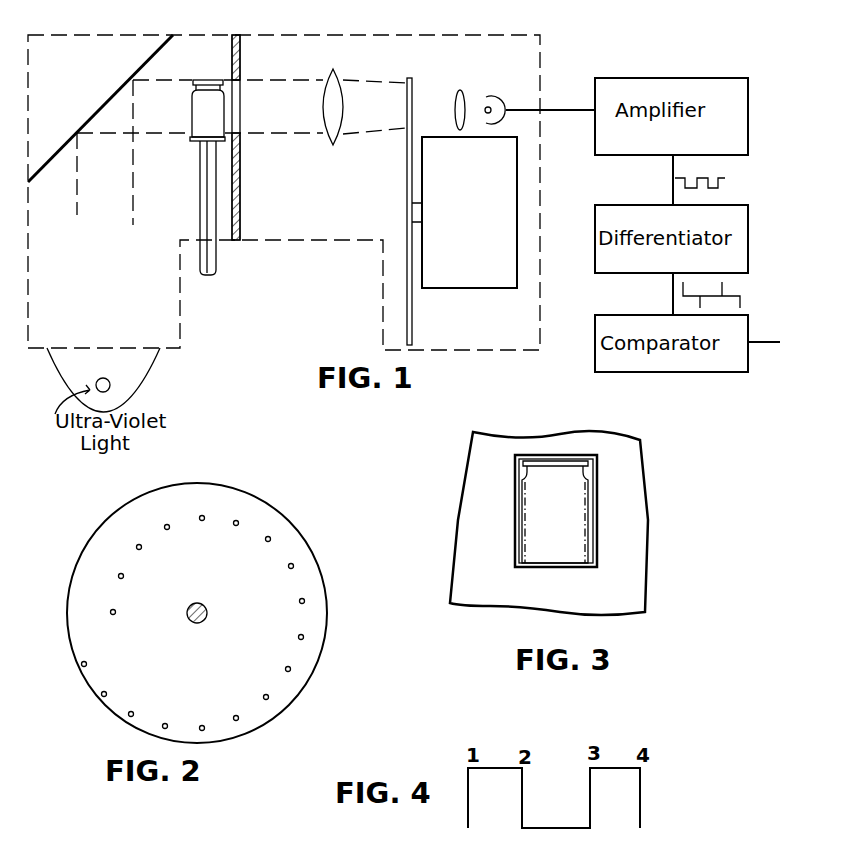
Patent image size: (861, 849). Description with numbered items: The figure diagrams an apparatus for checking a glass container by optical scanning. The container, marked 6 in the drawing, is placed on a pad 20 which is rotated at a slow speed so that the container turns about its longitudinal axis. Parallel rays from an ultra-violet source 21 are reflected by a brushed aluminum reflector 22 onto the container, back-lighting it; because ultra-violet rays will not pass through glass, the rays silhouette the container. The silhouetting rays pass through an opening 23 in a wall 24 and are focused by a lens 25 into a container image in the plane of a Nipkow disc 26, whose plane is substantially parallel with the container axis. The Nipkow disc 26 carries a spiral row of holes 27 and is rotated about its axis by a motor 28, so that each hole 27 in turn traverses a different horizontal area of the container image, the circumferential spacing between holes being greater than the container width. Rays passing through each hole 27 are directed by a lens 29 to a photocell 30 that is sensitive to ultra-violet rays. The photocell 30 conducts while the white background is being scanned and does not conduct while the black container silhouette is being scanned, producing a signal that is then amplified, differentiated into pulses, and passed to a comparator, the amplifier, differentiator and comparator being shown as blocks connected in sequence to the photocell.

In FIG. 1, the cap of sample tube 6 is at (207, 80).
In FIG. 1, the pad 20 is at (192, 140).
In FIG. 1, the ultra-violet source 21 is at (117, 384).
In FIG. 1, the brushed aluminum reflector 22 is at (87, 123).
In FIG. 1, the opening 23 is at (236, 80).
In FIG. 1, the wall 24 is at (240, 176).
In FIG. 3, the wall 24 is at (637, 594).
In FIG. 1, the lens 25 is at (329, 145).
In FIG. 3, the lens 25 is at (586, 480).
In FIG. 1, the Nipkow disc 26 is at (410, 215).
In FIG. 2, the Nipkow disc 26 is at (326, 590).
In FIG. 2, the holes 27 is at (271, 538).
In FIG. 1, the motor 28 is at (517, 190).
In FIG. 1, the lens 29 is at (462, 95).
In FIG. 1, the photocell 30 is at (496, 96).